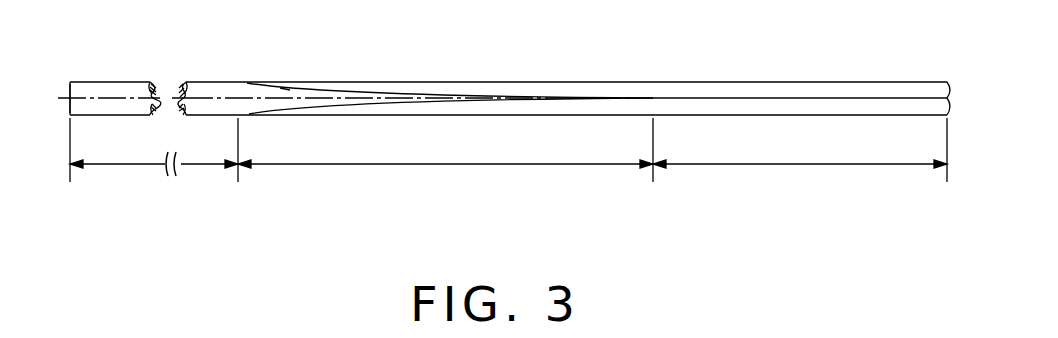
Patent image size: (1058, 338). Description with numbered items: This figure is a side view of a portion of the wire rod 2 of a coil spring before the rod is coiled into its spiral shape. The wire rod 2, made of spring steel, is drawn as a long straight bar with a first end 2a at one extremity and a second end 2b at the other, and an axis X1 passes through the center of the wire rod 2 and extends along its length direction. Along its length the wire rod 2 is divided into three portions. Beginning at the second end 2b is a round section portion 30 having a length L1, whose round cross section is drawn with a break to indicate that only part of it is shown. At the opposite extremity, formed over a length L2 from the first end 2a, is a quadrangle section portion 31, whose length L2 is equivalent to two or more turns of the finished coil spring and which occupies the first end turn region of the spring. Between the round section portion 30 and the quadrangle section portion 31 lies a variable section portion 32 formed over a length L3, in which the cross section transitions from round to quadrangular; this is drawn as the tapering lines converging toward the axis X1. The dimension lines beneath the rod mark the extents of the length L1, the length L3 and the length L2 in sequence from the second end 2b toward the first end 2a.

The wire rod 2 is at (212, 81).
The first end 2a is at (950, 91).
The second end 2b is at (69, 91).
The round section portion 30 is at (112, 80).
The quadrangle section portion 31 is at (850, 85).
The variable section portion 32 is at (416, 82).
The axis X1 is at (284, 88).
The length of round section portion L1 is at (130, 165).
The length of quadrangle section portion L2 is at (800, 165).
The length of variable section portion L3 is at (440, 165).